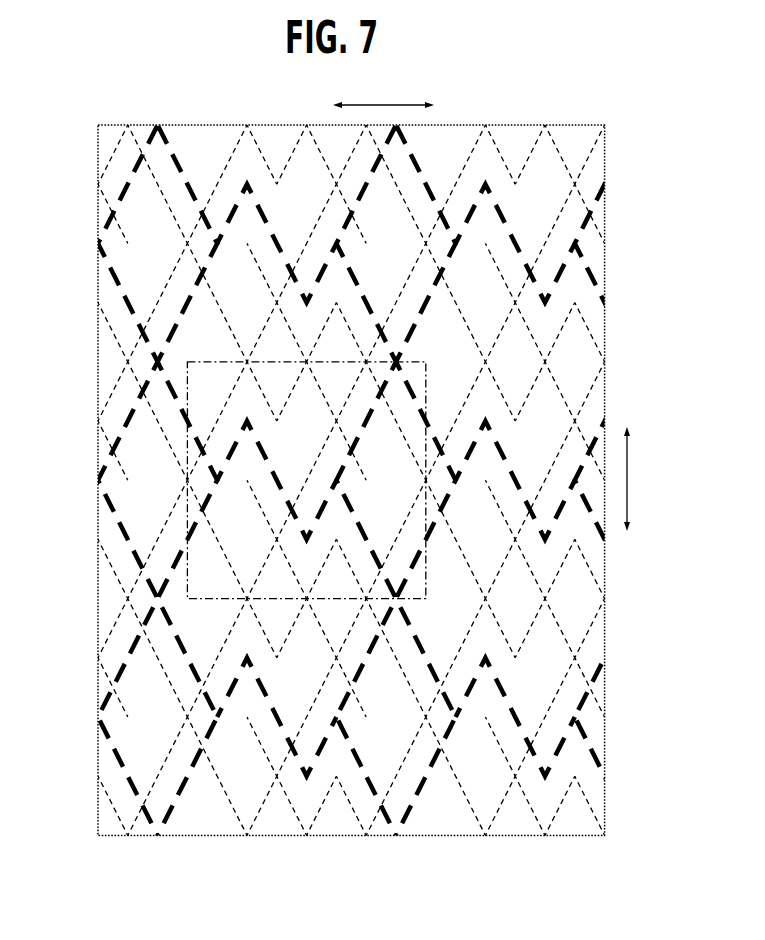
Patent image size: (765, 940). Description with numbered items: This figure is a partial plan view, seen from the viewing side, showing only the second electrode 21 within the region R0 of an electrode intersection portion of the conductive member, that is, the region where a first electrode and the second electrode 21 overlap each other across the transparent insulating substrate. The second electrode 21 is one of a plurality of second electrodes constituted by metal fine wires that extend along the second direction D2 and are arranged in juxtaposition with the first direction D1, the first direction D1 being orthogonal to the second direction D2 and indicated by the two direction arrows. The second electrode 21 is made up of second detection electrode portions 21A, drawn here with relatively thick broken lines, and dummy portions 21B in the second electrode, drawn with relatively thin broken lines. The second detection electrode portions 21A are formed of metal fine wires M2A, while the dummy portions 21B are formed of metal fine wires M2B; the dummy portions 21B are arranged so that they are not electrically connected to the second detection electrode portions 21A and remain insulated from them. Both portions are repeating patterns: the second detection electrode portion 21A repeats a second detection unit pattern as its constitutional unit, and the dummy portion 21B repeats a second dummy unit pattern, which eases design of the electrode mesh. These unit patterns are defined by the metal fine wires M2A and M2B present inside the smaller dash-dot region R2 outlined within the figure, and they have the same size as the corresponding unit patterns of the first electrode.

The second electrode 21 is at (618, 145).
The second detection electrode portion 21A is at (173, 157).
The dummy portion in the second electrode 21B is at (112, 157).
The region R0 is at (606, 212).
The region R2 is at (188, 397).
The metal fine wires M2A is at (608, 283).
The metal fine wires M2B is at (608, 334).
The first direction D1 is at (383, 89).
The second direction D2 is at (647, 479).